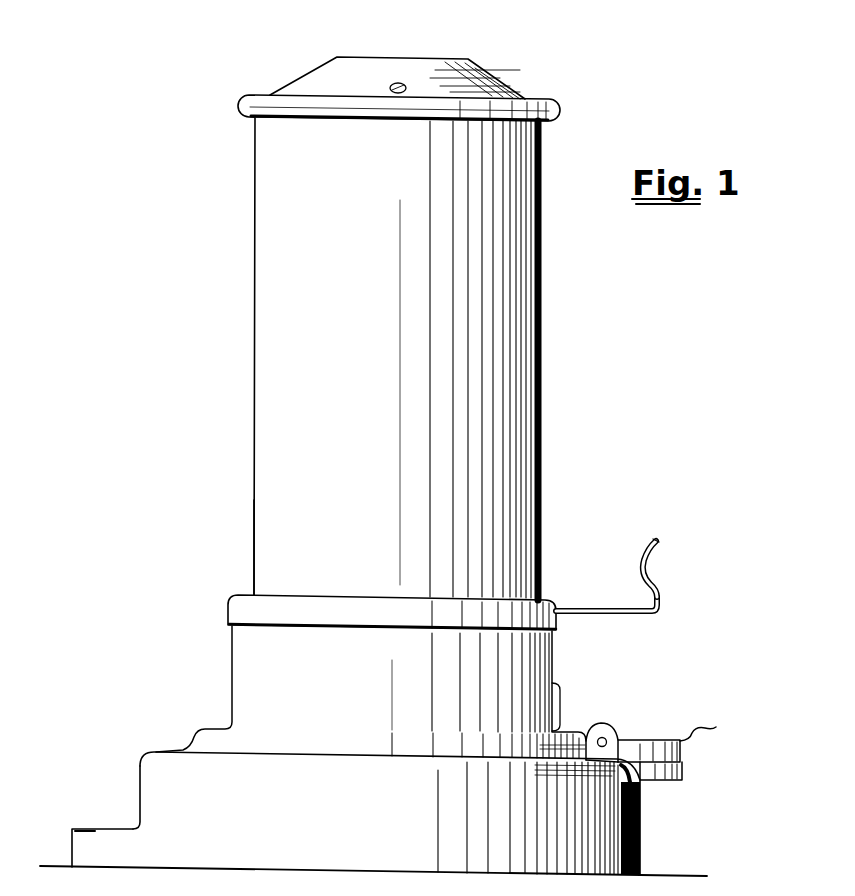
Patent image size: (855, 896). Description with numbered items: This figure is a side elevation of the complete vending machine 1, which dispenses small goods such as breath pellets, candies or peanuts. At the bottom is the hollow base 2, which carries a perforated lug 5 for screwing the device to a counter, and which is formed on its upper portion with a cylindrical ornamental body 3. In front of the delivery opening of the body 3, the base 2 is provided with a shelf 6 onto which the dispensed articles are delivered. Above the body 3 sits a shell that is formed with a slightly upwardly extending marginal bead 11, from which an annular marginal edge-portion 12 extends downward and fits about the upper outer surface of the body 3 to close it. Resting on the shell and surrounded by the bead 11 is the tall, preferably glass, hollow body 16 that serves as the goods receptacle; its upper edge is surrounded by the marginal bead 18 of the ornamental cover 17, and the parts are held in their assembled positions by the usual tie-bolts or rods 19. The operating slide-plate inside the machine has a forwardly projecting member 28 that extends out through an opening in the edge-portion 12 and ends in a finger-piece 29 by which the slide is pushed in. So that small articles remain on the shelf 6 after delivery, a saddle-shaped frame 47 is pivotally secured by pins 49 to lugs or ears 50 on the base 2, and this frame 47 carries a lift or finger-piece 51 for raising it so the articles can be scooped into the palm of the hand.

The vending machine 1 is at (418, 359).
The hollow base 2 is at (153, 772).
The ornamental body 3 is at (248, 667).
The perforated lug 5 is at (77, 832).
The shelf 6 is at (684, 775).
The marginal bead 11 is at (242, 592).
The annular marginal edge-portion 12 is at (228, 618).
The hollow body 16 is at (541, 303).
The ornamental cover 17 is at (357, 63).
The marginal bead 18 is at (238, 105).
The tie-bolts 19 is at (402, 84).
The forwardly projecting member 28 is at (605, 616).
The finger-piece 29 is at (659, 548).
The saddle-shaped frame 47 is at (653, 743).
The pins 49 is at (602, 738).
The lugs or ears 50 is at (612, 736).
The lift or finger-piece 51 is at (721, 728).